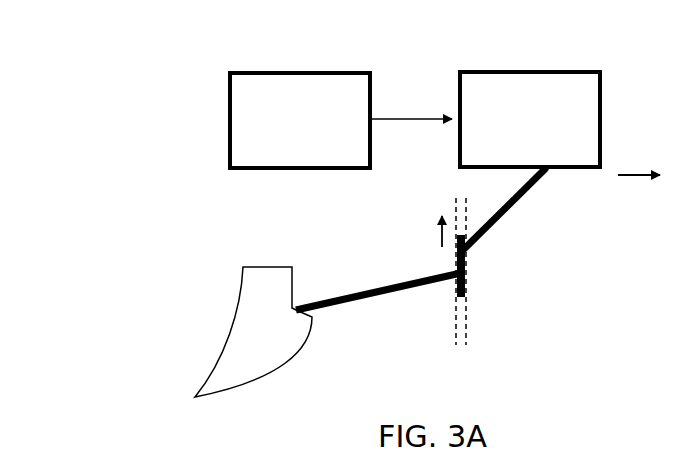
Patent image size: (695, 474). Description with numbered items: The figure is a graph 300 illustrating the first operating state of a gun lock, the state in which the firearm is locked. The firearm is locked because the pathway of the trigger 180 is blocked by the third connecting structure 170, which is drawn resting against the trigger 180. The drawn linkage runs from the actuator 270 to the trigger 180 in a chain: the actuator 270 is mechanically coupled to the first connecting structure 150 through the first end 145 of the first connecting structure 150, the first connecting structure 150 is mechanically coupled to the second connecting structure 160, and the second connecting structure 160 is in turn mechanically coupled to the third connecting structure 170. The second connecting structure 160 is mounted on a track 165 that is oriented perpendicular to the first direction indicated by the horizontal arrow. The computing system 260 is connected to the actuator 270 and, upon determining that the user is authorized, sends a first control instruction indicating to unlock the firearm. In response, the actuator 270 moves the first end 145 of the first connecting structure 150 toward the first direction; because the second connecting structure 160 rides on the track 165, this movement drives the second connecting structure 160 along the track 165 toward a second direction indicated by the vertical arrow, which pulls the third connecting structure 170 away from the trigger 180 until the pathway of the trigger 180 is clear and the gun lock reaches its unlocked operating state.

The graph 300 is at (96, 67).
The computing system 260 is at (300, 120).
The actuator 270 is at (530, 119).
The first end of the first connecting structure 145 is at (547, 171).
The first connecting structure 150 is at (505, 217).
The second connecting structure 160 is at (466, 285).
The track 165 is at (462, 330).
The third connecting structure 170 is at (347, 303).
The trigger 180 is at (268, 358).